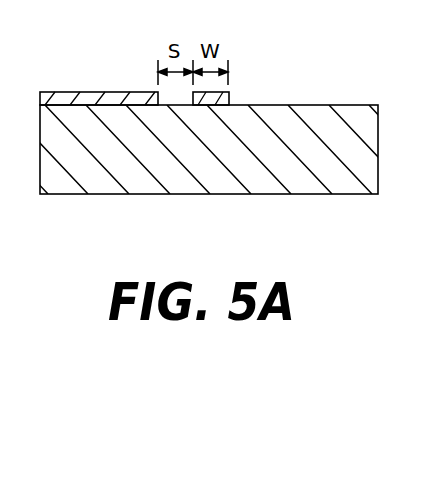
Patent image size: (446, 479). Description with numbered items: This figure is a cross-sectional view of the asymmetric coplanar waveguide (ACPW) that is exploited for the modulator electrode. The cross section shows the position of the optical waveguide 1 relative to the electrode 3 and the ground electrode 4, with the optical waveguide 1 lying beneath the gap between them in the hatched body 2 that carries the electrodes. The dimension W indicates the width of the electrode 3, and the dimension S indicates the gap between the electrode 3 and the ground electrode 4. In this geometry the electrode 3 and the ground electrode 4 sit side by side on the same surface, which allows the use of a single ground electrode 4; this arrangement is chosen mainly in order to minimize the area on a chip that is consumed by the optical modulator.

The optical waveguide 1 is at (172, 107).
The substrate 2 is at (290, 177).
The electrode 3 is at (229, 95).
The ground electrode 4 is at (99, 91).